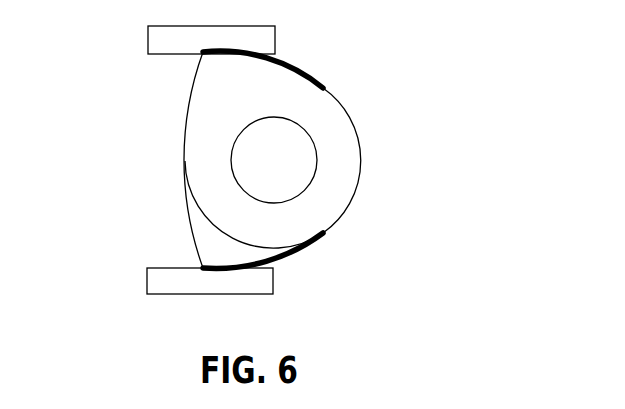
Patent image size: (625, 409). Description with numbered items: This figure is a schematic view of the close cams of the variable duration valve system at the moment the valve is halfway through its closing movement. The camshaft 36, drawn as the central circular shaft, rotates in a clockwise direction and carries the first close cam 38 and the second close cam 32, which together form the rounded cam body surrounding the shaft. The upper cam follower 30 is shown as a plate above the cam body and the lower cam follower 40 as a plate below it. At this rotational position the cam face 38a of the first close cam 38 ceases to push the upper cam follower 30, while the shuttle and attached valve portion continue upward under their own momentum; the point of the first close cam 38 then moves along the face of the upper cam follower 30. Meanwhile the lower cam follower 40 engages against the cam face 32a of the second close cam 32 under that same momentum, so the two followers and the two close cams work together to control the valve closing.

The upper cam follower 30 is at (168, 41).
The second close cam 32 is at (225, 243).
The cam face 32a is at (243, 266).
The camshaft 36 is at (278, 159).
The first close cam 38 is at (240, 98).
The cam face 38a is at (258, 60).
The lower cam follower 40 is at (163, 283).